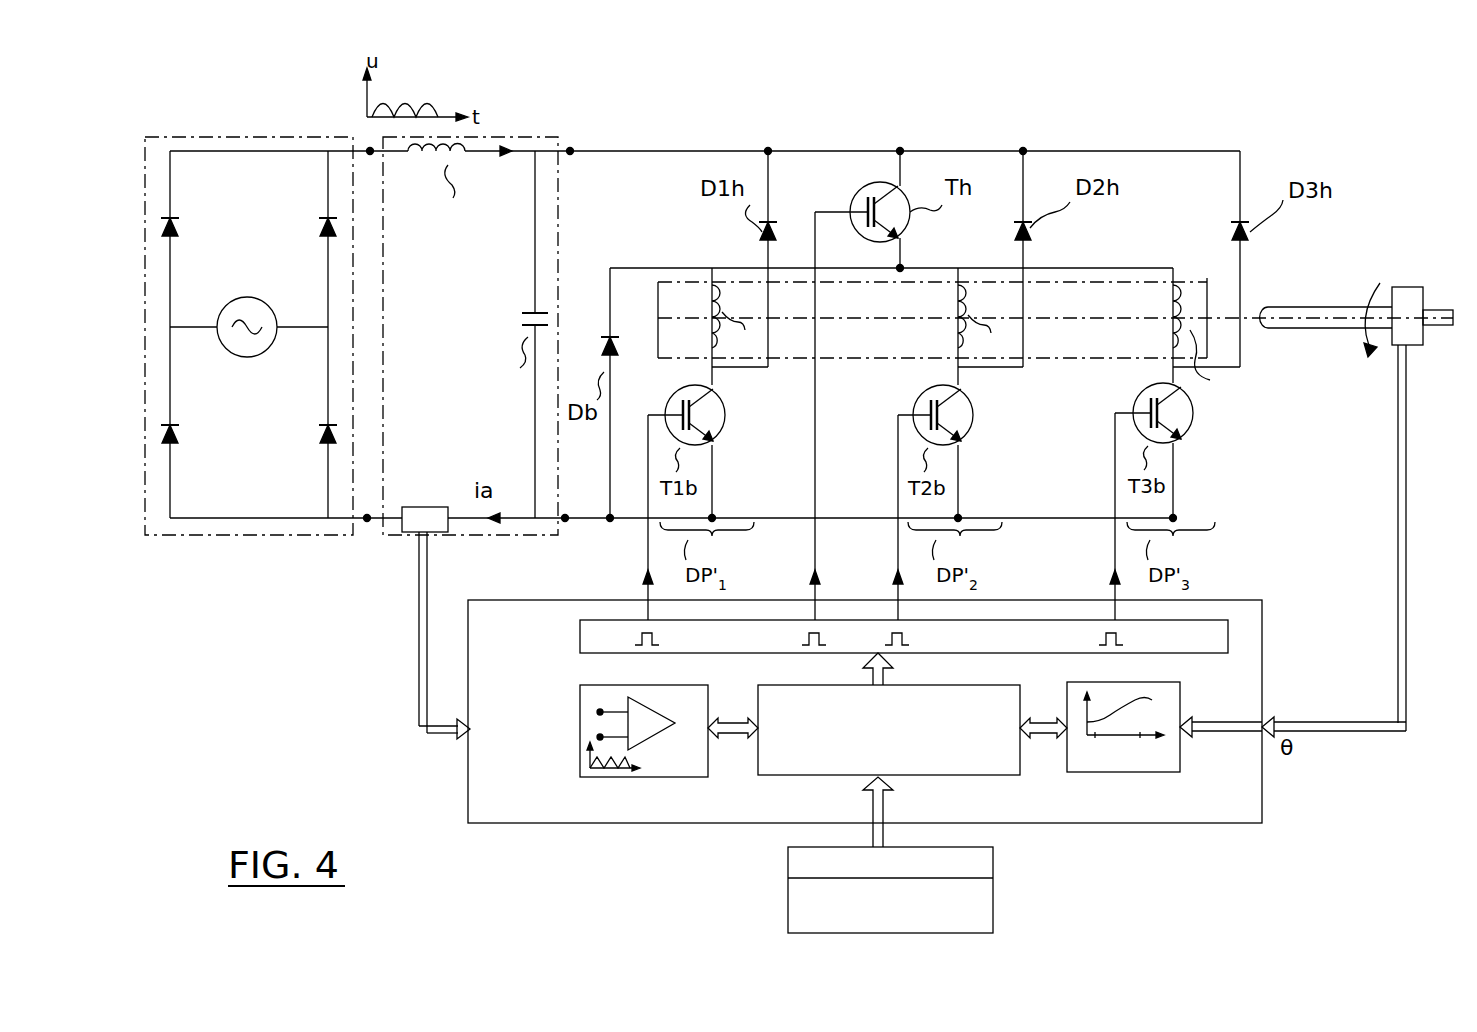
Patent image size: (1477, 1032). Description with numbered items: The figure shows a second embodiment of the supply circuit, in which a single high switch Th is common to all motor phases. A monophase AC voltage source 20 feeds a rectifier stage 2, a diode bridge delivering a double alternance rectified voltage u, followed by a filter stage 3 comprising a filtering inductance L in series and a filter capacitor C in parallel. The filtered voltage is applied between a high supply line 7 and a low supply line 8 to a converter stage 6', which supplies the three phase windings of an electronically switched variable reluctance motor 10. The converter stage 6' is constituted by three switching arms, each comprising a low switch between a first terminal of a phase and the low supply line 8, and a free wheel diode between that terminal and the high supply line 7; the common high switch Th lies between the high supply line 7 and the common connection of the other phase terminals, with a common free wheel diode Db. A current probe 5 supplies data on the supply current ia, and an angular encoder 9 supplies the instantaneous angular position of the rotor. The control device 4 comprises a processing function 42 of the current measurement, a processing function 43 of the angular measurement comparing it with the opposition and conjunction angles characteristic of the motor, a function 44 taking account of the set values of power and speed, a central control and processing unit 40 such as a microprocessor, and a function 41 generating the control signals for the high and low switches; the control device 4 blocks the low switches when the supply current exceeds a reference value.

The rectifier stage 2 is at (257, 377).
The monophase AC voltage source 20 is at (254, 298).
The filter stage 3 is at (470, 537).
The current probe 5 is at (410, 534).
The high supply line 7 is at (850, 151).
The low supply line 8 is at (792, 520).
The converter stage 6' is at (839, 416).
The electronically switched variable reluctance motor 10 is at (1215, 298).
The angular encoder 9 is at (1416, 287).
The central control and processing unit 40 is at (757, 760).
The function for generation of control signals 41 is at (1215, 603).
The processing function of the supply current measurement 42 is at (660, 778).
The processing function of the angular measurement 43 is at (1120, 772).
The function for taking account of operating values 44 is at (993, 895).
The control device 4 is at (908, 663).